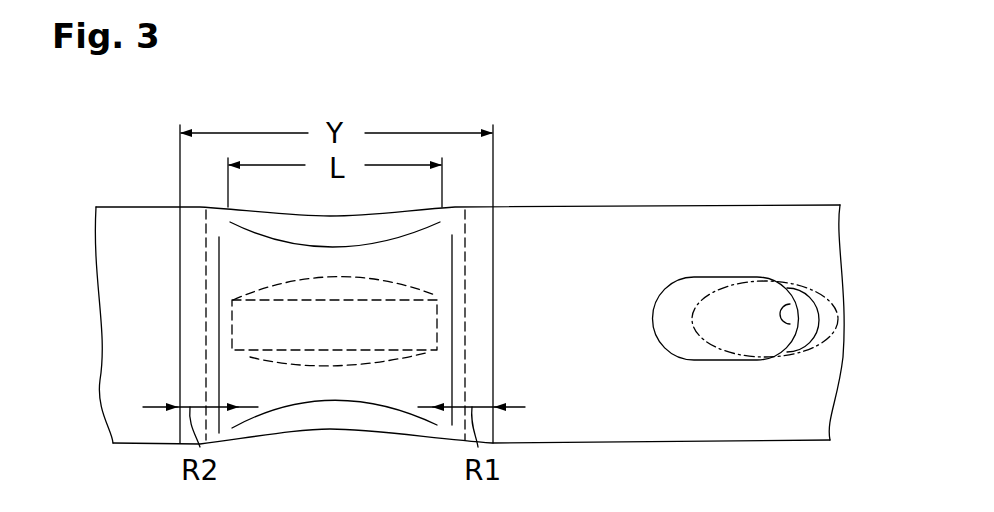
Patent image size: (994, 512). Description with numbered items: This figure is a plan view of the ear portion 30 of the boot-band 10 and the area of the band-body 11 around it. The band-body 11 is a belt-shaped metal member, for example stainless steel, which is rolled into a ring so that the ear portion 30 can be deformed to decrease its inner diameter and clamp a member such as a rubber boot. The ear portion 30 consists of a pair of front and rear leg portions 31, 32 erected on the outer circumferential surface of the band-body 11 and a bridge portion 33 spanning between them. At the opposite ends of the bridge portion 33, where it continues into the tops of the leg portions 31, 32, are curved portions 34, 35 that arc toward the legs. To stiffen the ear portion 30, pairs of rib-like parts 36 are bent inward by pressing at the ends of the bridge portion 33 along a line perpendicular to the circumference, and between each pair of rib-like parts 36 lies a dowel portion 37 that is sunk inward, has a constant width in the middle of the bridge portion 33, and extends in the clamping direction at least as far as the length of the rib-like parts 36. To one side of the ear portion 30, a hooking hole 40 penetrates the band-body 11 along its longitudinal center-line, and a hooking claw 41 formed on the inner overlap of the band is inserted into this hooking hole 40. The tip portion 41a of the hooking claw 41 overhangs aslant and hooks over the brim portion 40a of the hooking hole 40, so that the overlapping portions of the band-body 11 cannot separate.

The boot-band 10 is at (737, 180).
The band-body 11 is at (620, 205).
The ear portion 30 is at (160, 233).
The front leg portion 31 is at (493, 288).
The rear leg portion 32 is at (180, 280).
The bridge portion 33 is at (425, 262).
The curved portion 34 is at (478, 356).
The curved portion 35 is at (190, 346).
The rib-like part 36 is at (350, 215).
The dowel portion 37 is at (318, 342).
The hooking hole 40 is at (686, 357).
The brim portion 40a is at (840, 277).
The hooking claw 41 is at (793, 366).
The tip portion 41a is at (843, 360).